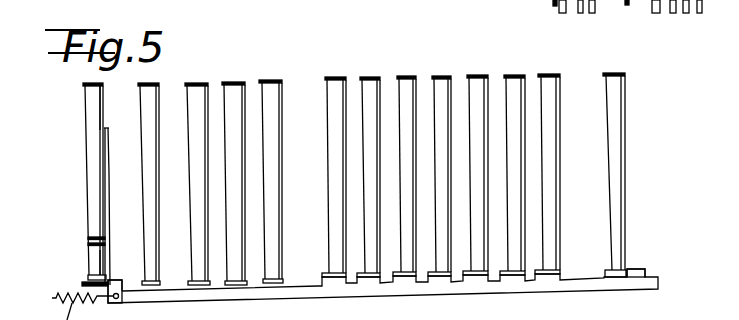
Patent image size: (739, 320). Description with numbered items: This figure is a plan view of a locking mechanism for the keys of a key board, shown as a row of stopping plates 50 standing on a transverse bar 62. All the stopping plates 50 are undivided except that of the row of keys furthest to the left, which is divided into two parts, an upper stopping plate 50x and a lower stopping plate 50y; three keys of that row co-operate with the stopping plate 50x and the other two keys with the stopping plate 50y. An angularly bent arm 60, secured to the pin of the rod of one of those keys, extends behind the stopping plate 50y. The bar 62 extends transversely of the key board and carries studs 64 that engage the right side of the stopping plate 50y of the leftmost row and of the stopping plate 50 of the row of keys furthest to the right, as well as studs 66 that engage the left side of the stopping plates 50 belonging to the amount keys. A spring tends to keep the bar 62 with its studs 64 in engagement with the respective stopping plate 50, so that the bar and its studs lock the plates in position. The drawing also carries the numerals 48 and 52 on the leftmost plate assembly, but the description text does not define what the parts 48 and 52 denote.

The end plate with clamps 48 is at (92, 143).
The stopping plate 50 is at (558, 141).
The stopping plate part 50x is at (100, 105).
The stopping plate part 50y is at (104, 268).
The insulating sheet 52 is at (110, 222).
The angularly bent arm 60 is at (82, 286).
The bar 62 is at (318, 300).
The stud 64 is at (121, 282).
The stud 66 is at (358, 273).